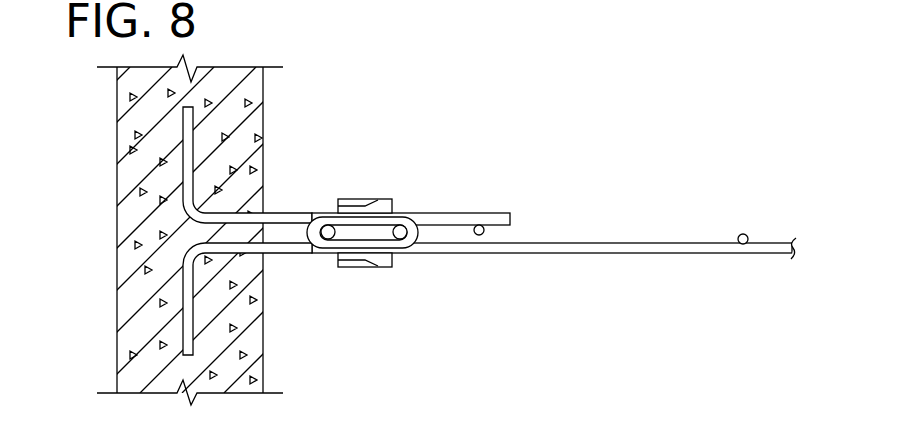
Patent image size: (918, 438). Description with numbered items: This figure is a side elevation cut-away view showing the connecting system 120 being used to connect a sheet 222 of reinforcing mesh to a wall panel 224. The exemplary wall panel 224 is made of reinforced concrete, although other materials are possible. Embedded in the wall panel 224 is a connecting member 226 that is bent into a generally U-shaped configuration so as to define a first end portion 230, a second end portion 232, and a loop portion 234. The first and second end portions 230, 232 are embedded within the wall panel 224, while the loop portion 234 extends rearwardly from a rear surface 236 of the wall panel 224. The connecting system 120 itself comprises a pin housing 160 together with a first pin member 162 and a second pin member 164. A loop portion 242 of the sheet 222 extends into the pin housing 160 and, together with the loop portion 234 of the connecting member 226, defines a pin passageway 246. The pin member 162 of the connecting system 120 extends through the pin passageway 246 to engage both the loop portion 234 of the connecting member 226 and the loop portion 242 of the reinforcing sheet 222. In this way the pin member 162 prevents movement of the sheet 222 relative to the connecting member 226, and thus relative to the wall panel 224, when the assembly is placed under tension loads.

The connecting system 120 is at (406, 186).
The pin housing 160 is at (381, 264).
The first pin member 162 is at (362, 234).
The second pin member 164 is at (403, 203).
The sheet of reinforcing mesh 222 is at (697, 232).
The wall panel 224 is at (267, 108).
The connecting member 226 is at (282, 255).
The first end portion 230 is at (182, 155).
The second end portion 232 is at (195, 299).
The loop portion 234 is at (424, 233).
The rear surface 236 is at (265, 347).
The loop portion 242 is at (303, 232).
The pin passageway 246 is at (323, 252).